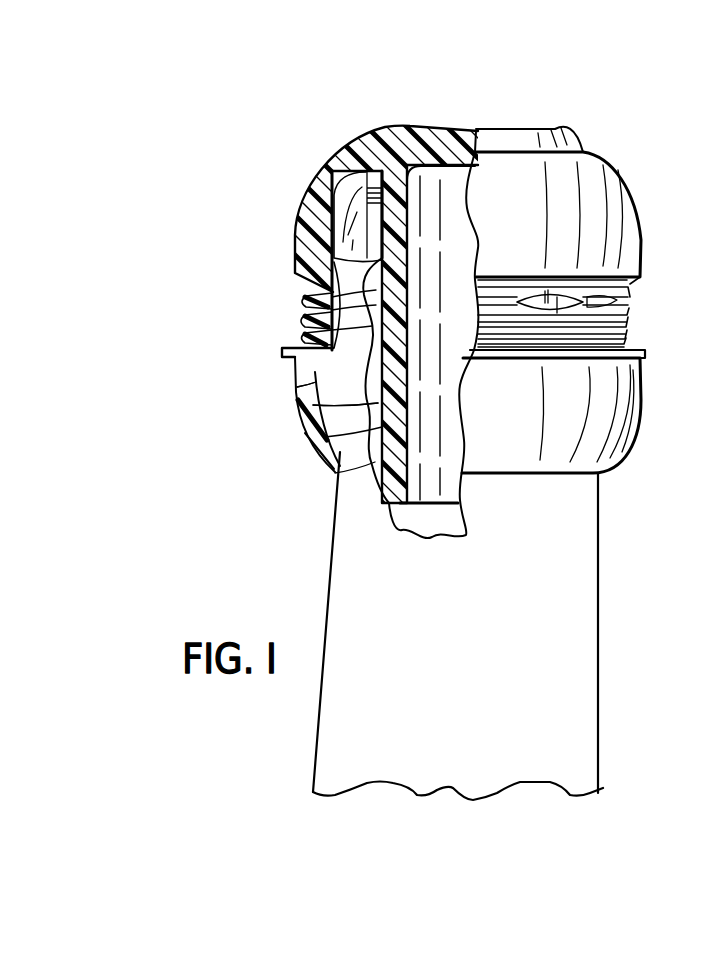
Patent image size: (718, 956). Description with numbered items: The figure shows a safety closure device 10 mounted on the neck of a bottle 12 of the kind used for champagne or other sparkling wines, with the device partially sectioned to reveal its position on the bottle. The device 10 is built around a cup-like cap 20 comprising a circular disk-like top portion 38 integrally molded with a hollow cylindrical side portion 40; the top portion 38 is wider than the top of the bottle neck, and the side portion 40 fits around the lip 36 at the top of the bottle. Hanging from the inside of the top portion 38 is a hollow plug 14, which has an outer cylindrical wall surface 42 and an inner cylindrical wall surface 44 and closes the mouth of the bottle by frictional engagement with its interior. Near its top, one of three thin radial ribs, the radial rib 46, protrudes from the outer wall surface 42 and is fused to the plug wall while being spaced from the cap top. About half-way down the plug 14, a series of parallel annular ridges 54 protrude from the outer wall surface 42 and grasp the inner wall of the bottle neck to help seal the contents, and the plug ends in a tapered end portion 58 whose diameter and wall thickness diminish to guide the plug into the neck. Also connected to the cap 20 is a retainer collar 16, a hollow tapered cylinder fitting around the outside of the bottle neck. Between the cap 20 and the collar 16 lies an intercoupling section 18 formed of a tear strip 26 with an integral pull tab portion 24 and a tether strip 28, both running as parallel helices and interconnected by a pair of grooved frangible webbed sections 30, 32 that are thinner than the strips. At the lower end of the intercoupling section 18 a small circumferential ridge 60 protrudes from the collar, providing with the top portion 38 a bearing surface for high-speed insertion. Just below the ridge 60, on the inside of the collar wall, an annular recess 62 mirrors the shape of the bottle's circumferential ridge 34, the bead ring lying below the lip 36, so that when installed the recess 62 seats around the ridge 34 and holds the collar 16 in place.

The safety closure device 10 is at (587, 211).
The bottle 12 is at (600, 527).
The plug 14 is at (332, 432).
The retainer collar 16 is at (497, 401).
The intercoupling section 18 is at (627, 334).
The cap 20 is at (520, 202).
The pull tab portion 24 is at (624, 300).
The tear strip 26 is at (482, 302).
The tether strip 28 is at (629, 310).
The grooved frangible webbed section 30 is at (630, 344).
The grooved frangible webbed section 32 is at (628, 323).
The circumferential ridge 34 is at (297, 387).
The lip 36 is at (328, 247).
The top portion 38 is at (458, 142).
The side portion 40 is at (311, 178).
The outer cylindrical wall surface 42 is at (297, 407).
The inner cylindrical wall surface 44 is at (420, 334).
The radial rib 46 is at (406, 220).
The annular ridges 54 is at (327, 322).
The tapered end portion 58 is at (335, 473).
The circumferential ridge 60 is at (646, 360).
The annular recess 62 is at (296, 369).